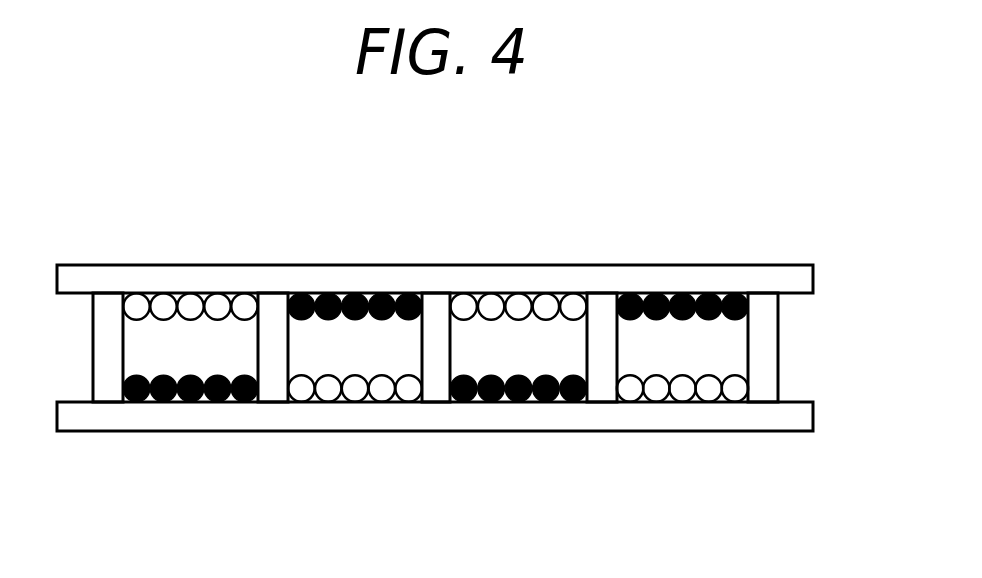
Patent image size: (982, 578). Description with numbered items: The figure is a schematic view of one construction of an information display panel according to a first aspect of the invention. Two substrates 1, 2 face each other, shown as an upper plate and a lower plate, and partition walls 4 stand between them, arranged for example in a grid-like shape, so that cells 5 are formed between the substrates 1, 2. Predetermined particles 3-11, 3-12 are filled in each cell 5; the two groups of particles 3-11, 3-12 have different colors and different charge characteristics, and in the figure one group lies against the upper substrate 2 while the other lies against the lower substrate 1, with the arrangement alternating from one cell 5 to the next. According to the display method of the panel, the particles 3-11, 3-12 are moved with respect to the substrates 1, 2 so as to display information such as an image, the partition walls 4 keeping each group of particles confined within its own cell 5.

The substrate 1 is at (678, 415).
The substrate 2 is at (683, 280).
The particles 3-11 is at (516, 305).
The particles 3-12 is at (512, 397).
The partition wall 4 is at (765, 363).
The cell 5 is at (722, 353).